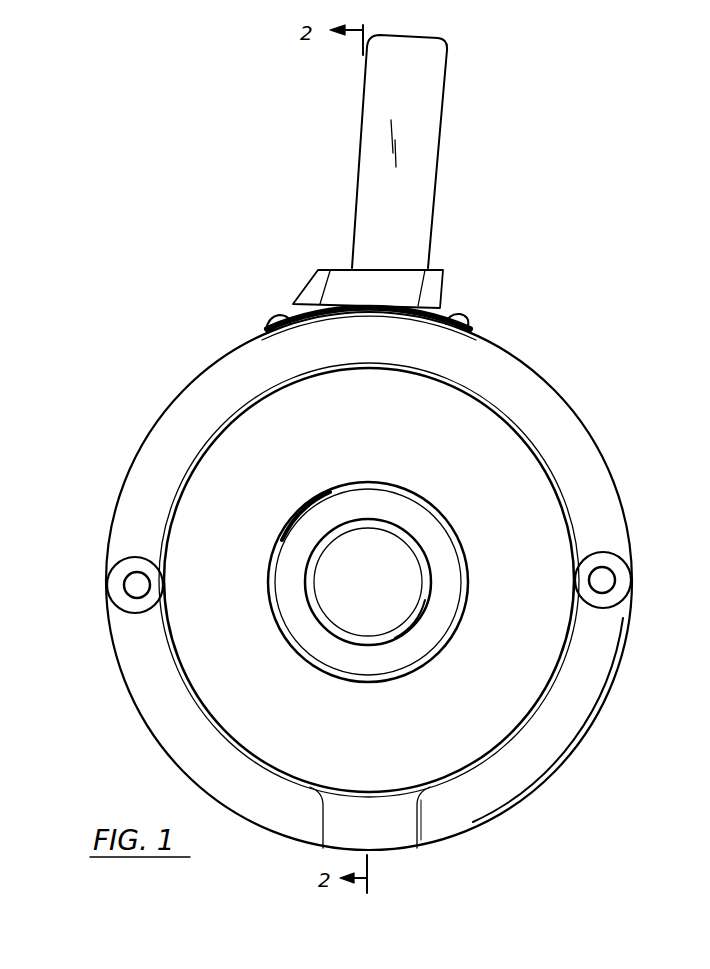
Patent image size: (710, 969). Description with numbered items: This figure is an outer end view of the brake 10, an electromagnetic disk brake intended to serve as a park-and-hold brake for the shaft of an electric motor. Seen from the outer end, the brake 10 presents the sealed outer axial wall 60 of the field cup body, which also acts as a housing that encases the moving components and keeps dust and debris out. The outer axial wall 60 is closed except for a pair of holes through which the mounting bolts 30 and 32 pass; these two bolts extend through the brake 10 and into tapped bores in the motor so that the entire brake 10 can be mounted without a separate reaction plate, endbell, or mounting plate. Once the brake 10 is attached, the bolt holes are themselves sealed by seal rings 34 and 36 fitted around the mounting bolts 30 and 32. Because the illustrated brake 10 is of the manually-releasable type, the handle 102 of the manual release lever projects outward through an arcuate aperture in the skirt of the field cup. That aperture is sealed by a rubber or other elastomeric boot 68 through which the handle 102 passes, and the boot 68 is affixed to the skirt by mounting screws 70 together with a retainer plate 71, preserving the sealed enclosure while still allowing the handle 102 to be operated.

The brake 10 is at (626, 360).
The mounting bolt 30 is at (130, 582).
The mounting bolt 32 is at (610, 582).
The seal ring 34 is at (117, 573).
The seal ring 36 is at (613, 565).
The outer axial wall 60 is at (530, 492).
The boot 68 is at (450, 282).
The mounting screw 70 is at (276, 318).
The retainer plate 71 is at (470, 333).
The handle 102 is at (401, 152).